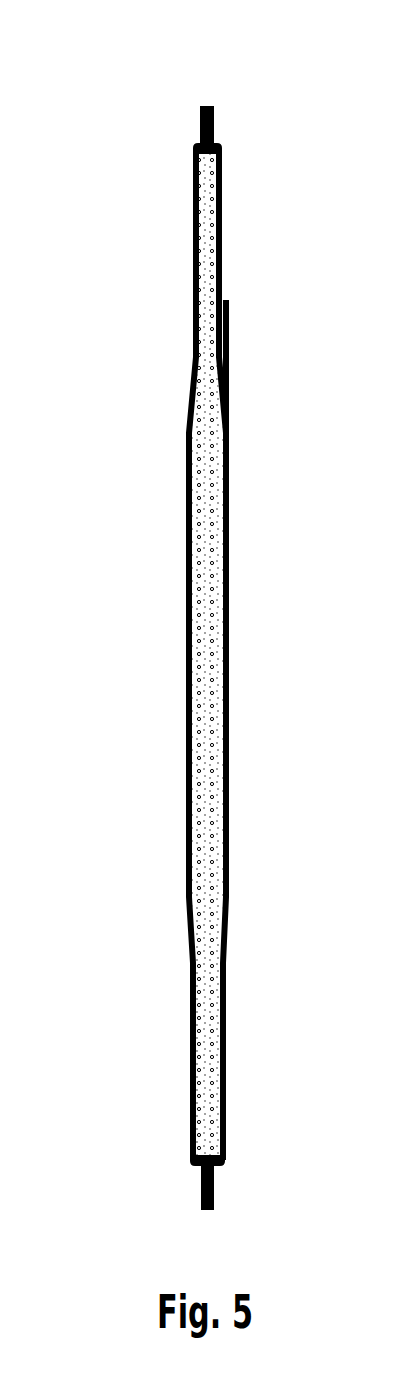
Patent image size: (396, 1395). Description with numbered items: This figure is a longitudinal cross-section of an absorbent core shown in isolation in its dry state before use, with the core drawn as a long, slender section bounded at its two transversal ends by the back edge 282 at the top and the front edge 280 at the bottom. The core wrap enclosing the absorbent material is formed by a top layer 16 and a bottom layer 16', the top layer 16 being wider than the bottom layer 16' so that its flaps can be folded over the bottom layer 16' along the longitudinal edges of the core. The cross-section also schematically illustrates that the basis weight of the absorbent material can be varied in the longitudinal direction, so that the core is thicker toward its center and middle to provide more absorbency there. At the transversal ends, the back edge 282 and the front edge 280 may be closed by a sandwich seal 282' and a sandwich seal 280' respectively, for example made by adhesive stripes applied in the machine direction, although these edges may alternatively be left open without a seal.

The top layer 16 is at (161, 654).
The bottom layer 16' is at (274, 500).
The back edge 282 is at (219, 78).
The sandwich seal 282' is at (261, 117).
The front edge 280 is at (129, 1217).
The sandwich seal 280' is at (265, 1188).